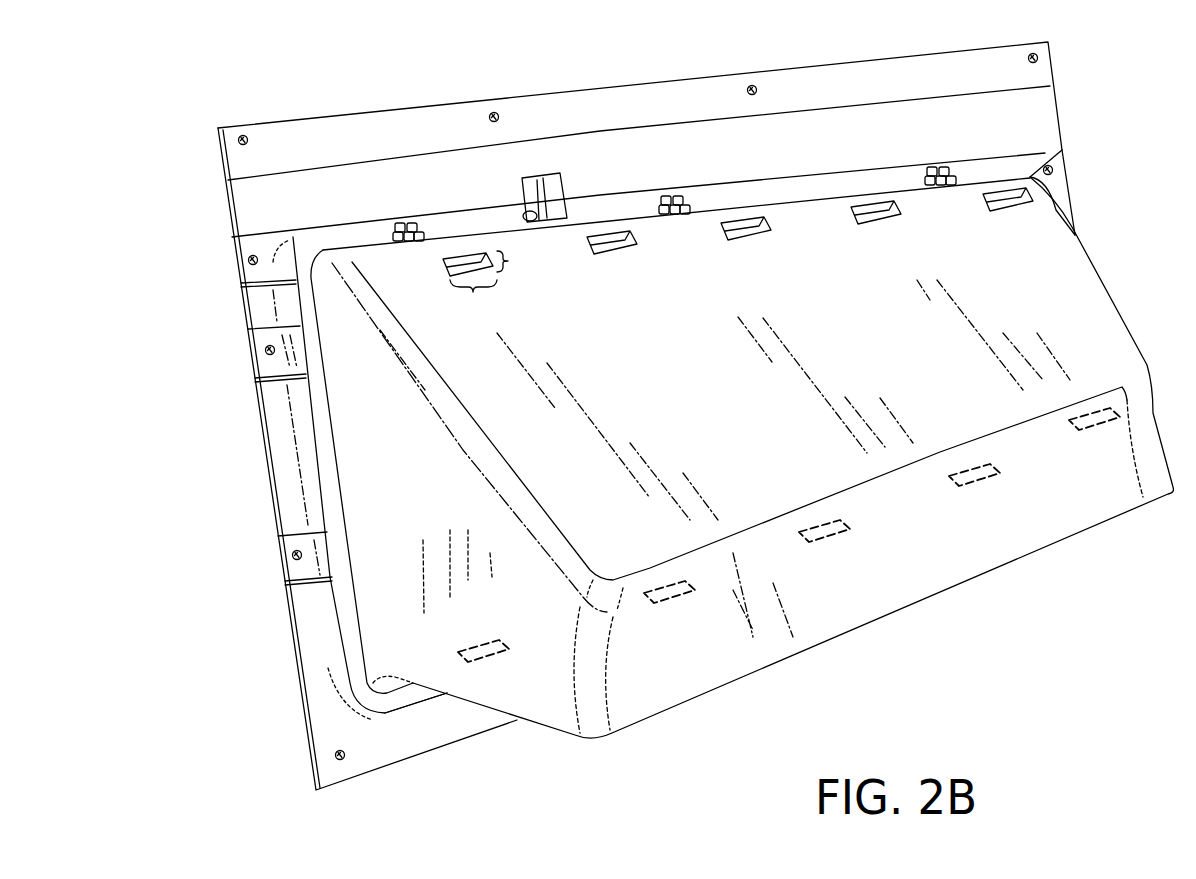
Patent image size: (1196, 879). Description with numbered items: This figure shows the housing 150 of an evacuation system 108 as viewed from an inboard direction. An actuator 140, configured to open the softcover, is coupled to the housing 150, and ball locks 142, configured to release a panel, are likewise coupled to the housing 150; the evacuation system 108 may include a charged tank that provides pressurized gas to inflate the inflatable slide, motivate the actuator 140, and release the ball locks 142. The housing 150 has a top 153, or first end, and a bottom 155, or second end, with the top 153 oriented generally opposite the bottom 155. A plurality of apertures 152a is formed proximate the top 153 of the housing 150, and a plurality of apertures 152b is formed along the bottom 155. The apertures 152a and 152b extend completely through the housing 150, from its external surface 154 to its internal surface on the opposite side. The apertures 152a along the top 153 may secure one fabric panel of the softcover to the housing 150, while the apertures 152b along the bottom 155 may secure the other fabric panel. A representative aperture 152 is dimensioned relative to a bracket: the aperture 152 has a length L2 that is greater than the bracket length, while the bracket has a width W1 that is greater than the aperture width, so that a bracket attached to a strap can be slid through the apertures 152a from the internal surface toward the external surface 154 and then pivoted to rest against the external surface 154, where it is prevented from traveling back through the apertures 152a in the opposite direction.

The evacuation system 108 is at (164, 94).
The actuator 140 is at (552, 192).
The ball locks 142 is at (922, 182).
The housing 150 is at (1070, 300).
The aperture 152 is at (446, 270).
The apertures 152a is at (744, 238).
The apertures 152b is at (848, 527).
The top 153 is at (1032, 175).
The external surface 154 is at (718, 394).
The bottom 155 is at (447, 693).
The width of bracket W1 is at (518, 258).
The length of aperture L2 is at (473, 302).